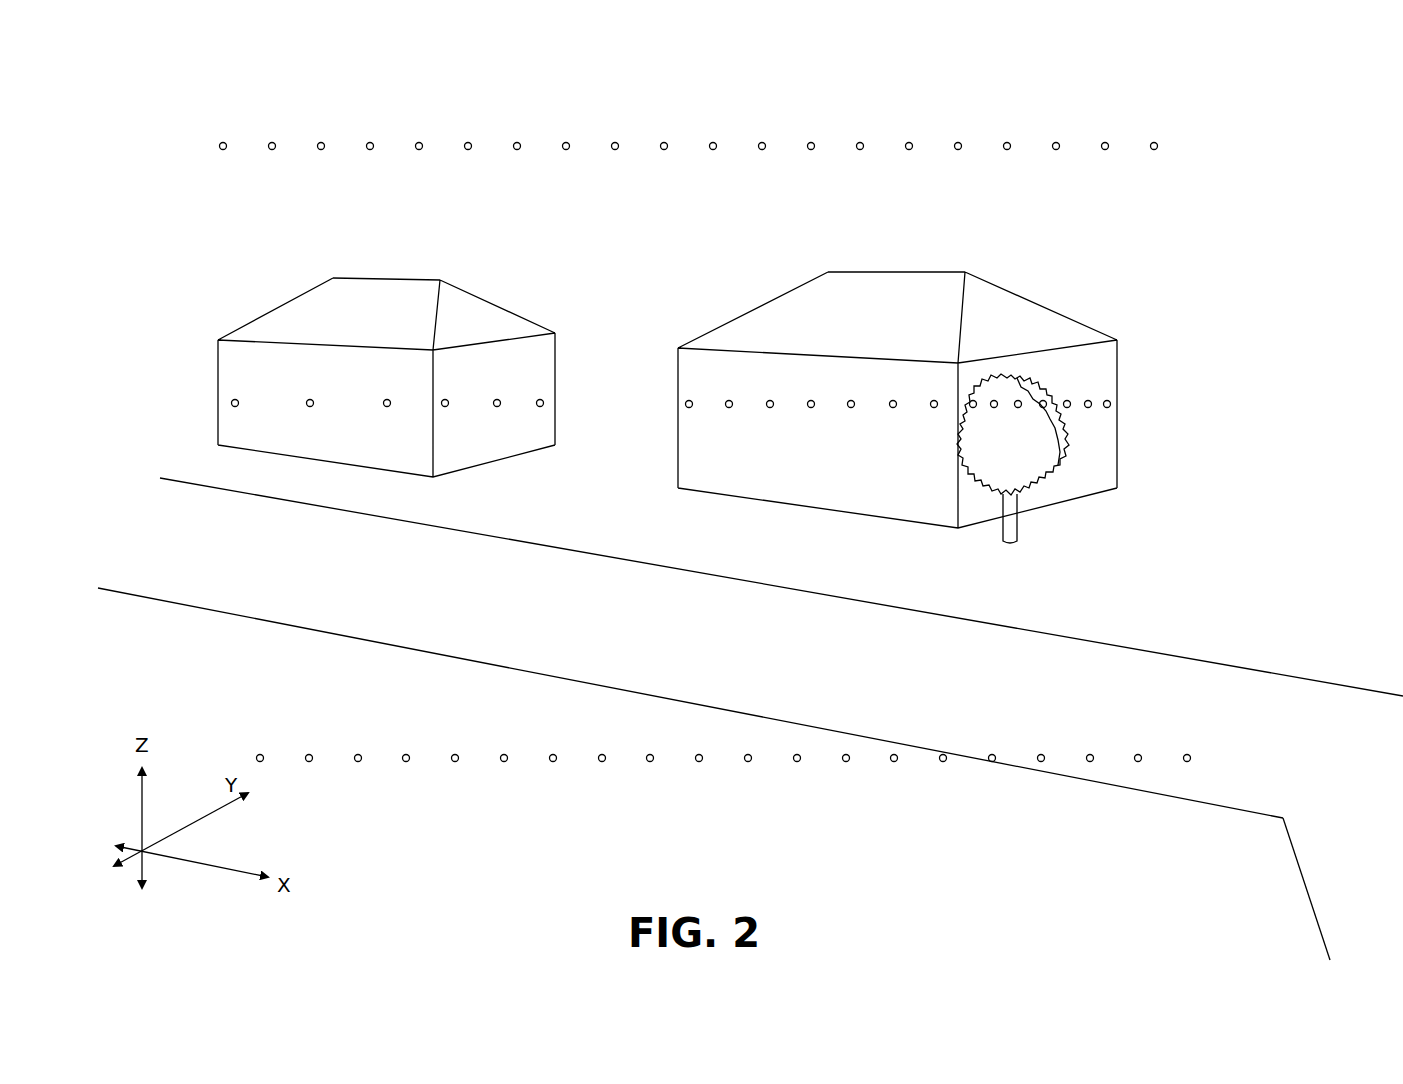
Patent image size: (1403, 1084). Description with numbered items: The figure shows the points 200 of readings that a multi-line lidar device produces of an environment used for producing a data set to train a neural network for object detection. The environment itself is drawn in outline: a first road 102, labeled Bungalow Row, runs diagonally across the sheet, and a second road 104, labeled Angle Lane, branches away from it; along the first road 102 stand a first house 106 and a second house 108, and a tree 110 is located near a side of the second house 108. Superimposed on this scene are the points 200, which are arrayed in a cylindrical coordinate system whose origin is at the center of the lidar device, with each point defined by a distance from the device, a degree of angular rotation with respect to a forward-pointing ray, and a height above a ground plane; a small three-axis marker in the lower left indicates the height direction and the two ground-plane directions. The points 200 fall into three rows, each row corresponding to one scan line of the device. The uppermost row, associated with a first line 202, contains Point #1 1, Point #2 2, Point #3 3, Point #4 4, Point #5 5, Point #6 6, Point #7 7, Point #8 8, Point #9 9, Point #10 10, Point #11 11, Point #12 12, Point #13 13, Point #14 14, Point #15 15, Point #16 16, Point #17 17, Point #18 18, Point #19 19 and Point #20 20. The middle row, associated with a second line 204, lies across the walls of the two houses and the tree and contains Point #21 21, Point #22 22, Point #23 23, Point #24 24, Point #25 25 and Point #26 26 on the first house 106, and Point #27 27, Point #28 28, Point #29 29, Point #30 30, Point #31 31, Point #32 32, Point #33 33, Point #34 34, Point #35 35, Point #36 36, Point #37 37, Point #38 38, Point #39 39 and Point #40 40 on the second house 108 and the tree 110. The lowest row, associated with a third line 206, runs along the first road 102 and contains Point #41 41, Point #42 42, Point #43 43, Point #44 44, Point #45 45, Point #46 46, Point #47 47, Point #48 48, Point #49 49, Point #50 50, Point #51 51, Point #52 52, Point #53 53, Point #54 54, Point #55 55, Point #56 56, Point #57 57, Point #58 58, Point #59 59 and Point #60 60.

The points 200 is at (138, 62).
The first road 102 is at (498, 568).
The second road 104 is at (1320, 872).
The first house 106 is at (470, 328).
The second house 108 is at (1010, 312).
The tree 110 is at (1033, 462).
The first line 202 is at (1207, 88).
The second line 204 is at (1159, 357).
The third line 206 is at (1254, 703).
The Point # 1 is at (226, 143).
The Point # 2 is at (274, 150).
The Point # 3 is at (324, 143).
The Point # 4 is at (372, 150).
The Point # 5 is at (422, 143).
The Point # 6 is at (470, 150).
The Point # 7 is at (520, 143).
The Point # 8 is at (568, 150).
The Point # 9 is at (618, 143).
The Point # 10 is at (666, 150).
The Point # 11 is at (716, 143).
The Point # 12 is at (764, 150).
The Point # 13 is at (814, 143).
The Point # 14 is at (862, 150).
The Point # 15 is at (912, 143).
The Point # 16 is at (960, 150).
The Point # 17 is at (1010, 143).
The Point # 18 is at (1058, 150).
The Point # 19 is at (1108, 143).
The Point # 20 is at (1156, 150).
The Point # 21 is at (238, 400).
The Point # 22 is at (312, 407).
The Point # 23 is at (390, 400).
The Point # 24 is at (447, 407).
The Point # 25 is at (500, 400).
The Point # 26 is at (542, 407).
The Point # 27 is at (692, 401).
The Point # 28 is at (731, 408).
The Point # 29 is at (773, 401).
The Point # 30 is at (813, 408).
The Point # 31 is at (854, 401).
The Point # 32 is at (895, 408).
The Point # 33 is at (934, 400).
The Point # 34 is at (974, 408).
The Point # 35 is at (994, 400).
The Point # 36 is at (1018, 408).
The Point # 37 is at (1046, 401).
The Point # 38 is at (1068, 408).
The Point # 39 is at (1091, 401).
The Point # 40 is at (1109, 408).
The Point # 41 is at (263, 755).
The Point # 42 is at (311, 762).
The Point # 43 is at (361, 755).
The Point # 44 is at (408, 762).
The Point # 45 is at (458, 755).
The Point # 46 is at (506, 762).
The Point # 47 is at (556, 755).
The Point # 48 is at (604, 762).
The Point # 49 is at (653, 755).
The Point # 50 is at (701, 762).
The Point # 51 is at (751, 755).
The Point # 52 is at (799, 762).
The Point # 53 is at (849, 755).
The Point # 54 is at (896, 762).
The Point # 55 is at (946, 755).
The Point # 56 is at (994, 762).
The Point # 57 is at (1044, 755).
The Point # 58 is at (1092, 762).
The Point # 59 is at (1141, 755).
The Point # 60 is at (1189, 762).